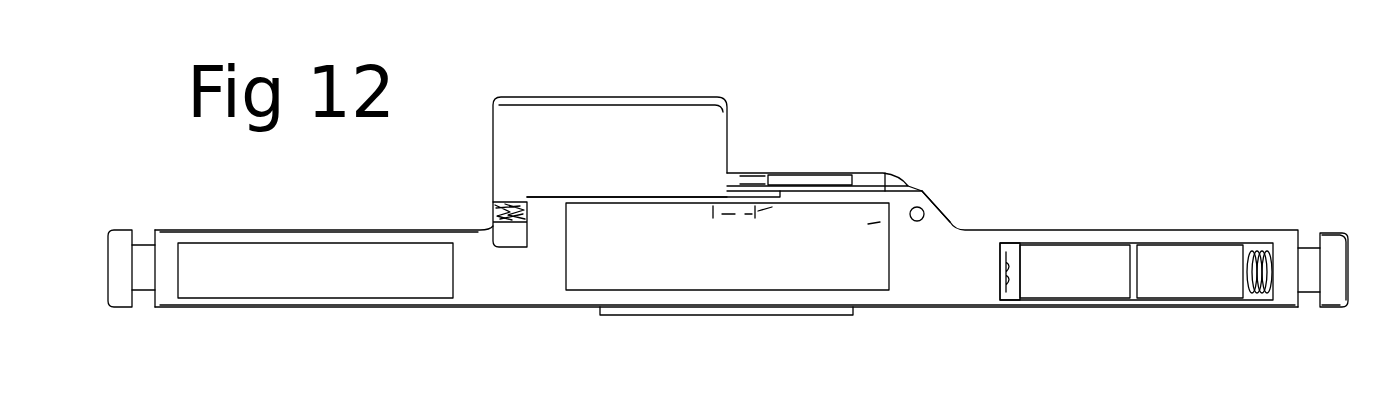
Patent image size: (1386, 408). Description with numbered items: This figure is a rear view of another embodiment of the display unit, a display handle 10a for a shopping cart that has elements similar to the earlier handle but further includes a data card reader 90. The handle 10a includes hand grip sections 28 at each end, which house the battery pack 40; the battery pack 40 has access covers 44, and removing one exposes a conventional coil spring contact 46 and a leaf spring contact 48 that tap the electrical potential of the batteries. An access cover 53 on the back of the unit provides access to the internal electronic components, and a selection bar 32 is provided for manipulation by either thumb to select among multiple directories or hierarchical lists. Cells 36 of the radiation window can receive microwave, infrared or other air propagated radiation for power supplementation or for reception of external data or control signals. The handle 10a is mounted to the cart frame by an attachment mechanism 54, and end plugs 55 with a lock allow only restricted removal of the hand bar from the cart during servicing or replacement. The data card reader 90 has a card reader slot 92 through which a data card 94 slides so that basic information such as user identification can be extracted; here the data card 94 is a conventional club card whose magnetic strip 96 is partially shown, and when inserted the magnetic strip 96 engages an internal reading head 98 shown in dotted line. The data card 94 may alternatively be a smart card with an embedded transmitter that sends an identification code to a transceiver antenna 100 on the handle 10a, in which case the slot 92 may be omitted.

The display handle 10a is at (955, 218).
The hand grip sections 28 is at (263, 230).
The selection bar 32 is at (782, 315).
The cells 36 is at (752, 176).
The battery pack 40 is at (1060, 250).
The access covers 44 is at (345, 250).
The coil spring contact 46 is at (1248, 240).
The leaf spring contact 48 is at (1022, 247).
The access cover 53 is at (870, 223).
The attachment mechanism 54 is at (1333, 247).
The end plugs 55 is at (1342, 310).
The data card reader 90 is at (885, 191).
The card reader slot 92 is at (900, 188).
The data card 94 is at (728, 128).
The magnetic strip 96 is at (517, 202).
The internal reading head 98 is at (800, 173).
The transceiver antenna 100 is at (953, 218).